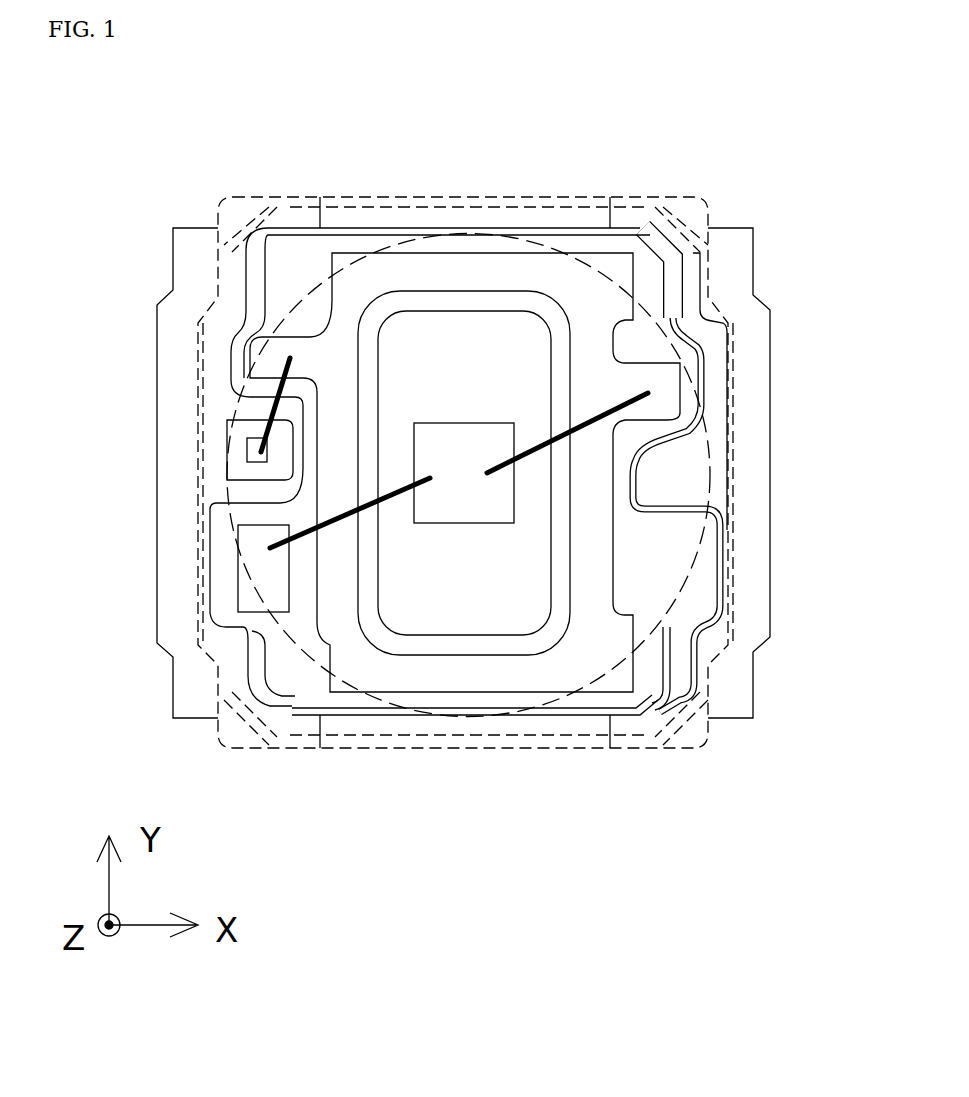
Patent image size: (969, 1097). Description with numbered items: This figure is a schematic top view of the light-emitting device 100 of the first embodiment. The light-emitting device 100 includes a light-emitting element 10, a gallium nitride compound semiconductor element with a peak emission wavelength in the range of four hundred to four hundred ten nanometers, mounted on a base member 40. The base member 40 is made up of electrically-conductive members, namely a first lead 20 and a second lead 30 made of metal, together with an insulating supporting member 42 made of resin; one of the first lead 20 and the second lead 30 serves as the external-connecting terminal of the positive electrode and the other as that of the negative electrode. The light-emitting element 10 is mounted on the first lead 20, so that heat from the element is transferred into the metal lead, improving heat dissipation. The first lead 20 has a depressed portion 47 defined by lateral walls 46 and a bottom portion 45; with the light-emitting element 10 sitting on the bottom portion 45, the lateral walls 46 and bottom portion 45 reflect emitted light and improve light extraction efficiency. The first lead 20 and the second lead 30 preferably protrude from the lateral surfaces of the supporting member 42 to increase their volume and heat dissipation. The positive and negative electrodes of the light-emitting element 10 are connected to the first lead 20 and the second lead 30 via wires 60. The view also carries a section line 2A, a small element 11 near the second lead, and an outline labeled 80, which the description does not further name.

The light-emitting device 100 is at (677, 150).
The light-emitting element 10 is at (462, 498).
The protective element 11 is at (248, 452).
The first lead 20 is at (460, 615).
The second lead 30 is at (262, 585).
The base member 40 is at (275, 838).
The supporting member 42 is at (312, 643).
The bottom portion 45 is at (512, 607).
The lateral walls 46 is at (567, 607).
The depressed portion 47 is at (690, 838).
The wires 60 is at (690, 462).
The package body 80 is at (688, 586).
The section line 2A is at (805, 393).